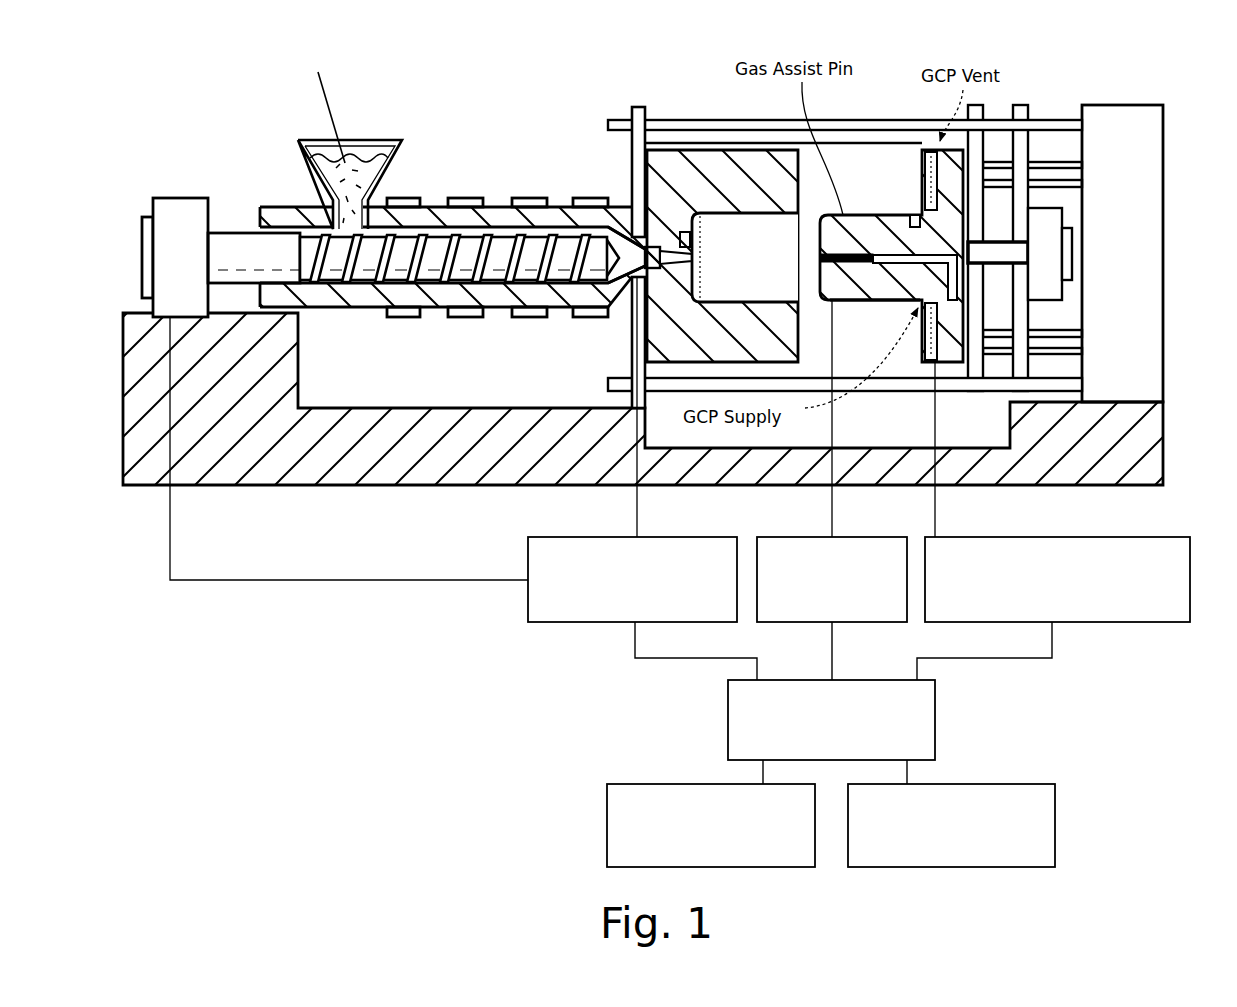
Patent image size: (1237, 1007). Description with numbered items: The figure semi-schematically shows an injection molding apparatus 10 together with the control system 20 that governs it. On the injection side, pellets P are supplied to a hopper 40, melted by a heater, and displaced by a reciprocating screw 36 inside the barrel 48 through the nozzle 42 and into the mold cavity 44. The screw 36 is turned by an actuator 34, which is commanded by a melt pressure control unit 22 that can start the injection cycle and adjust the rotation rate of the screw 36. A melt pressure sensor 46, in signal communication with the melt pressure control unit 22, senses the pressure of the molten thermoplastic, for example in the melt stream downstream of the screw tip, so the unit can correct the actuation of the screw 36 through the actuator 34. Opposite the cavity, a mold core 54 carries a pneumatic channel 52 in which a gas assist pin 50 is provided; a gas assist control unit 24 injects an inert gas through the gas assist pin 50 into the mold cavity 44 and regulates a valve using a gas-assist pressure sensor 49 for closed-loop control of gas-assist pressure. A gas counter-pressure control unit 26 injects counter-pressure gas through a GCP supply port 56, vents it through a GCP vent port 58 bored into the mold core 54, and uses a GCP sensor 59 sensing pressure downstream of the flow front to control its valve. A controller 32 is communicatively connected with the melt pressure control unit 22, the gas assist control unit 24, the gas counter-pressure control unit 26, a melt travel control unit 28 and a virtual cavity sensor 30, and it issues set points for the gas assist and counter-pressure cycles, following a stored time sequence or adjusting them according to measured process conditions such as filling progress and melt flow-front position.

The injection molding apparatus 10 is at (524, 131).
The control system 20 is at (444, 731).
The melt pressure control unit 22 is at (552, 595).
The gas assist control unit 24 is at (870, 547).
The gas counter-pressure control unit 26 is at (1127, 603).
The melt travel control unit 28 is at (628, 838).
The virtual cavity sensor 30 is at (1028, 857).
The controller 32 is at (925, 713).
The actuator 34 is at (183, 228).
The reciprocating screw 36 is at (312, 245).
The hopper 40 is at (392, 148).
The nozzle 42 is at (647, 247).
The mold cavity 44 is at (721, 218).
The melt pressure sensor 46 is at (615, 267).
The barrel 48 is at (425, 215).
The gas-assist pressure sensor 49 is at (680, 236).
The gas assist pin 50 is at (853, 253).
The pneumatic channel 52 is at (887, 258).
The mold core 54 is at (872, 290).
The gas counter pressure supply port 56 is at (925, 305).
The GCP vent port 58 is at (938, 150).
The GCP sensor 59 is at (920, 220).
The pellets P is at (325, 106).